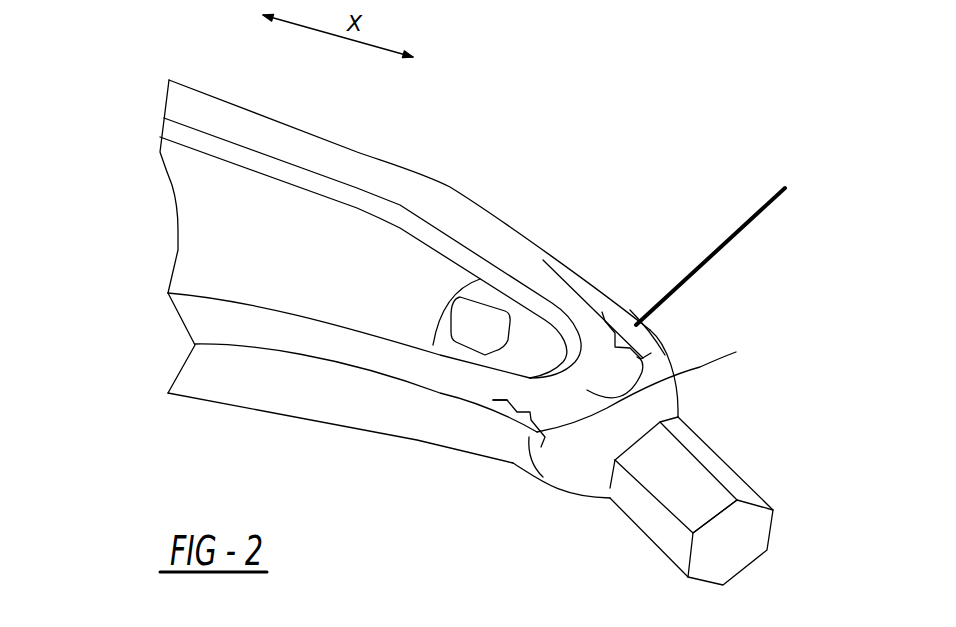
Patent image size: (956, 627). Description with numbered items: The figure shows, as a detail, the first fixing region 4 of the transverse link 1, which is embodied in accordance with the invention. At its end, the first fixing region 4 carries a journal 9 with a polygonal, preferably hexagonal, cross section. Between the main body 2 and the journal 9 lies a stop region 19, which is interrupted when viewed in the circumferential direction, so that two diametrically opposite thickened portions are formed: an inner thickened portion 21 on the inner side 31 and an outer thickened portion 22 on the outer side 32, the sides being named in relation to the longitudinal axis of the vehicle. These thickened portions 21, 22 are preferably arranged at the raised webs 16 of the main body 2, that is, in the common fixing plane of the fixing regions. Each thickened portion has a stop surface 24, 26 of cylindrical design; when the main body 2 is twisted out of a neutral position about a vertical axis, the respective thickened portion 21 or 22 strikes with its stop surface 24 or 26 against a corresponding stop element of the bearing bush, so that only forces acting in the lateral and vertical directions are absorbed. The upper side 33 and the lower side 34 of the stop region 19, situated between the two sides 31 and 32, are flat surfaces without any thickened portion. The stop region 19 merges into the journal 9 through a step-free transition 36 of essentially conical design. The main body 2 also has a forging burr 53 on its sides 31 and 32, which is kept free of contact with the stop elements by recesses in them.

The transverse link 1 is at (136, 98).
The main body 2 is at (202, 227).
The first fixing region 4 is at (718, 248).
The journal 9 is at (707, 497).
The raised webs 16 is at (200, 312).
The stop region 19 is at (572, 379).
The inner thickened portion 21 is at (652, 331).
The outer thickened portion 22 is at (518, 433).
The stop surface 24 is at (630, 310).
The stop surface 26 is at (502, 423).
The inner side 31 is at (423, 152).
The outer side 32 is at (322, 423).
The upper side 33 is at (648, 385).
The lower side 34 is at (567, 506).
The step-free transition 36 is at (679, 410).
The forging burr 53 is at (213, 377).